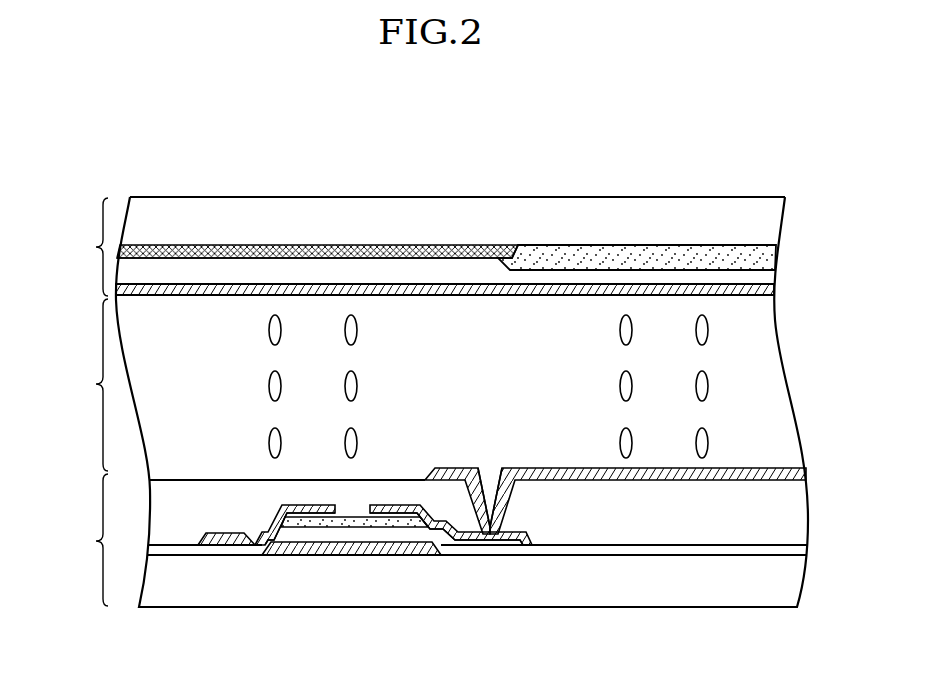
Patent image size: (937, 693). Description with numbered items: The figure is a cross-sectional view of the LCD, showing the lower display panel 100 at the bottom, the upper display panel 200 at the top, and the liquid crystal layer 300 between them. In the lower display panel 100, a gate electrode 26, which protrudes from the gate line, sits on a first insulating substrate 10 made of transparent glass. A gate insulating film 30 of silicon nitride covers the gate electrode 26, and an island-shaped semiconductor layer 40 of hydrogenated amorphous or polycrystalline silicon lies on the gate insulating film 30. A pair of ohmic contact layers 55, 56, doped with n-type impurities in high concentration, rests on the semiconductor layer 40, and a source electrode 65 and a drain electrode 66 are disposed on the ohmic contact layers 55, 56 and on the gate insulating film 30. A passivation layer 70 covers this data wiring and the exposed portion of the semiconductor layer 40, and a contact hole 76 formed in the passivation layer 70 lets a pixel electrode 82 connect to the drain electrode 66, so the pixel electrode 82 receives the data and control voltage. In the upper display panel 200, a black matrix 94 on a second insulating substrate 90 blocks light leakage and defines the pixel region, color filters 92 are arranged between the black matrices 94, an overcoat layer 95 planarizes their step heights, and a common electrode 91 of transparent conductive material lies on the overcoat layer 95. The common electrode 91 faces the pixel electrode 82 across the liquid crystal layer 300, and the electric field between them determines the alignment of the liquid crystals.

The first insulating substrate 10 is at (575, 595).
The gate electrode 26 is at (366, 550).
The gate insulating film 30 is at (713, 548).
The semiconductor layer 40 is at (324, 527).
The ohmic contact layer 55 is at (286, 530).
The ohmic contact layer 56 is at (404, 546).
The source electrode 65 is at (243, 542).
The drain electrode 66 is at (460, 540).
The passivation layer 70 is at (177, 540).
The contact hole 76 is at (490, 456).
The pixel electrode 82 is at (628, 482).
The second insulating substrate 90 is at (227, 228).
The common electrode 91 is at (162, 289).
The color filter 92 is at (633, 255).
The black matrix 94 is at (396, 246).
The overcoat layer 95 is at (302, 270).
The lower display panel 100 is at (77, 540).
The upper display panel 200 is at (77, 247).
The liquid crystal layer 300 is at (77, 385).